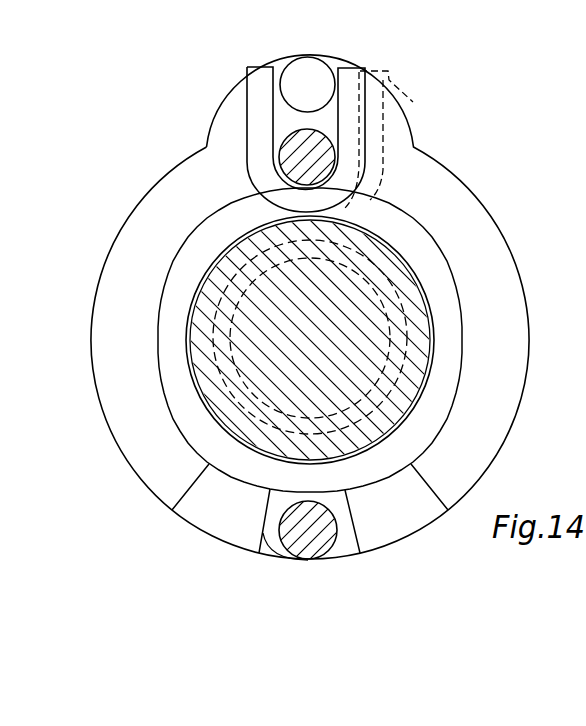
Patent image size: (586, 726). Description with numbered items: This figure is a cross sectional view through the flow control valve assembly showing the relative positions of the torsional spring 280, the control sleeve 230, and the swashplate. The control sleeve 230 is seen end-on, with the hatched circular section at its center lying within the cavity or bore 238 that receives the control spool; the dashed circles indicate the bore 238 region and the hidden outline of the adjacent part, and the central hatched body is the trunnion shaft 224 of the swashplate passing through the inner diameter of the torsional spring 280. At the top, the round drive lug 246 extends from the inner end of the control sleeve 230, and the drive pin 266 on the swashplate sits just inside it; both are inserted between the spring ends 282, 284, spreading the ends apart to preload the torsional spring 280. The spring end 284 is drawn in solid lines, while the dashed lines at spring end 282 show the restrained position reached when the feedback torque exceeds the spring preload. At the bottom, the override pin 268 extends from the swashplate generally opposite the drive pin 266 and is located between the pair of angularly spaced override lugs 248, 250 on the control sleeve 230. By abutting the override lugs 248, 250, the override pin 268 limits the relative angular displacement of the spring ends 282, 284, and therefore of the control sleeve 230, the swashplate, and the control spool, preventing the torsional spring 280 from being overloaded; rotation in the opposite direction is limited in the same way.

The control sleeve 230 is at (487, 211).
The torsional spring 280 is at (178, 298).
The shaft 224 is at (408, 288).
The cavity (bore) 238 is at (410, 308).
The end of the torsional spring 284 is at (260, 92).
The end of the torsional spring 282 is at (367, 98).
The drive lug 246 is at (305, 76).
The drive pin 266 is at (292, 160).
The override pin 268 is at (283, 545).
The override lug 248 is at (207, 483).
The override lug 250 is at (415, 480).